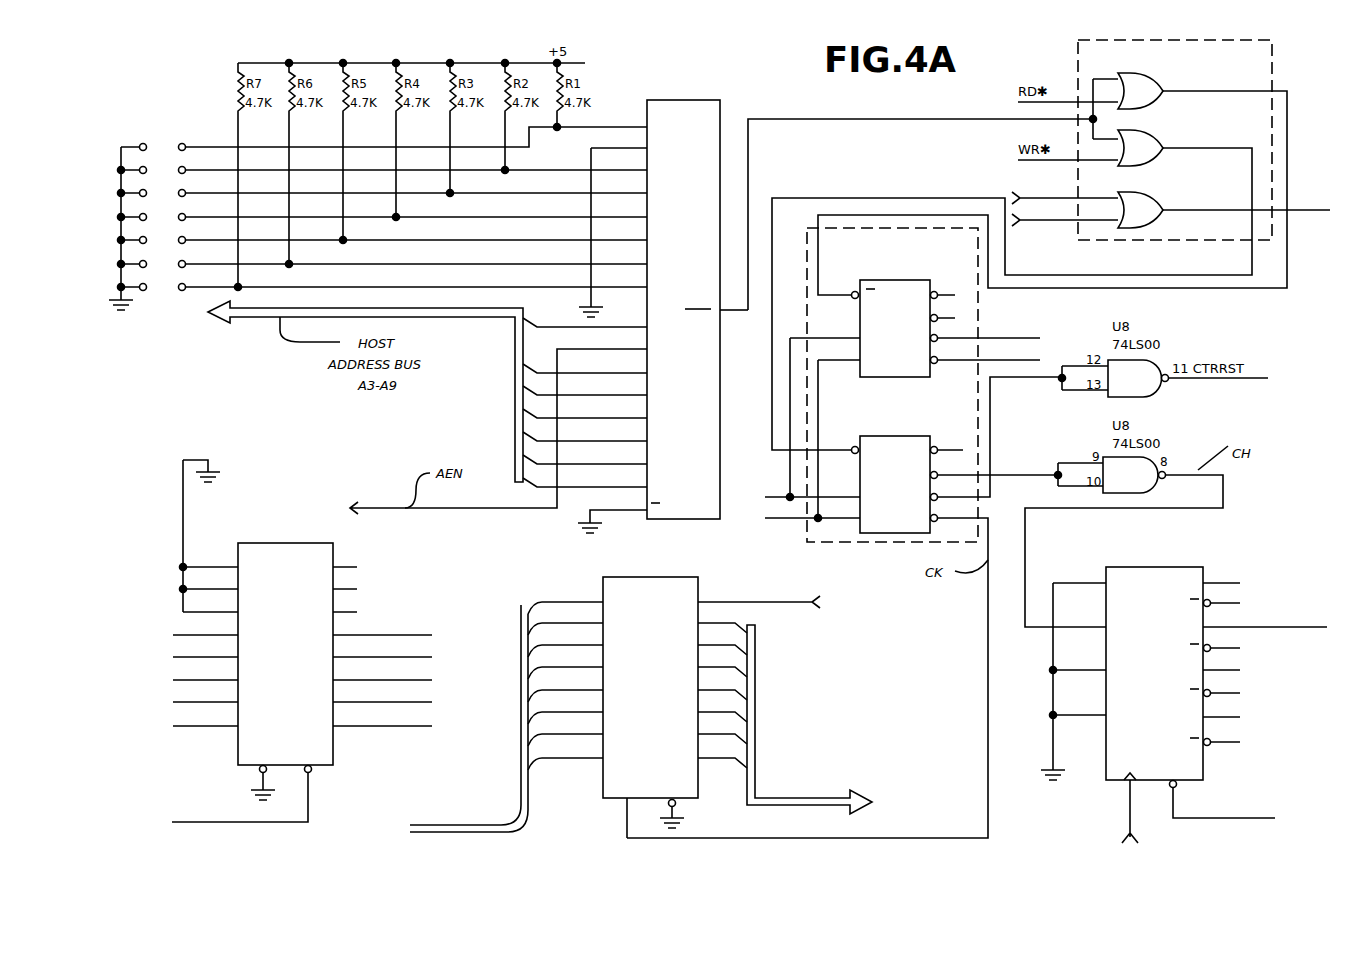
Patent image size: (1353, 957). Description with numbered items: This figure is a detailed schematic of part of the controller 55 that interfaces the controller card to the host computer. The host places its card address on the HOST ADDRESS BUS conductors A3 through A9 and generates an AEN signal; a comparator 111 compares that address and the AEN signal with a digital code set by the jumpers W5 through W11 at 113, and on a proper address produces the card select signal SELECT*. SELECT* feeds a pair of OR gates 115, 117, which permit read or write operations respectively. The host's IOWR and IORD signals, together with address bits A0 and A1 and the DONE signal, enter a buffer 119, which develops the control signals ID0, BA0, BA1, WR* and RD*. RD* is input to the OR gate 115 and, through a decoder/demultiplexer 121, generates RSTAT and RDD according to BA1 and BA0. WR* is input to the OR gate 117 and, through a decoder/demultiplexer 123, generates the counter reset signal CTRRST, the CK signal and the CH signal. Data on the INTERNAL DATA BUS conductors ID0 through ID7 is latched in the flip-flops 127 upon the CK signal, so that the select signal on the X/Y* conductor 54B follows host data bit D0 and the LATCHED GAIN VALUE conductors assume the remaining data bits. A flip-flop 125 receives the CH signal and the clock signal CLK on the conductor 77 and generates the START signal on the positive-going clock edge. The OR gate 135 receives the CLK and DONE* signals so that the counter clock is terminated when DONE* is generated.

The jumpers 113 is at (216, 126).
The comparator 111 is at (720, 383).
The controller 55 is at (738, 96).
The OR gate 115 is at (1147, 74).
The OR gate 117 is at (1128, 168).
The OR gate 135 is at (1130, 242).
The conductor 77 is at (1022, 190).
The decoder/demultiplexer 121 is at (912, 378).
The decoder/demultiplexer 123 is at (857, 441).
The flip-flop 125 is at (1195, 567).
The buffer 119 is at (333, 543).
The flip-flops 127 is at (690, 577).
The X/Y* conductor 54B is at (800, 600).